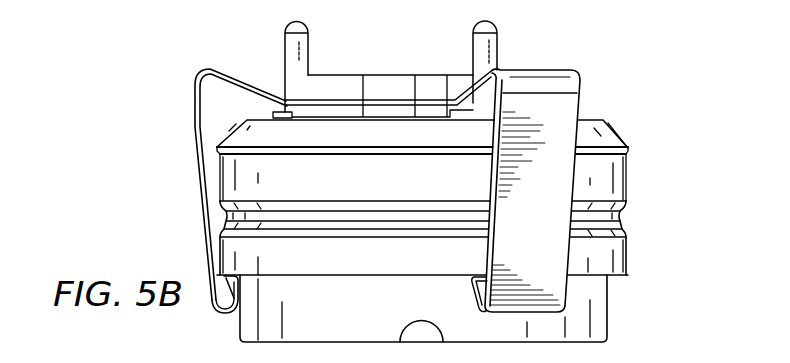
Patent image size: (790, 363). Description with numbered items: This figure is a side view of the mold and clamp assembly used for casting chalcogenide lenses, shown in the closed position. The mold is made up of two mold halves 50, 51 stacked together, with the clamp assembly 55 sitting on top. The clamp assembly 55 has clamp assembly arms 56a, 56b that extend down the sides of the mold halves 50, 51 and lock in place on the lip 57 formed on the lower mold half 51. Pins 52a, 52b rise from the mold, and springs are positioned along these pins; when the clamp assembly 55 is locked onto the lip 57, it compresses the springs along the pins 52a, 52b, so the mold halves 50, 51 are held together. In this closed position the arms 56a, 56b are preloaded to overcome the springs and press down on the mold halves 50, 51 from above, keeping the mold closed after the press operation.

The mold half 50 is at (619, 133).
The mold half 51 is at (630, 254).
The pin 52a is at (283, 55).
The pin 52b is at (498, 52).
The clamp assembly 55 is at (390, 74).
The clamp assembly arm 56a is at (202, 201).
The clamp assembly arm 56b is at (560, 110).
The lip 57 is at (617, 277).